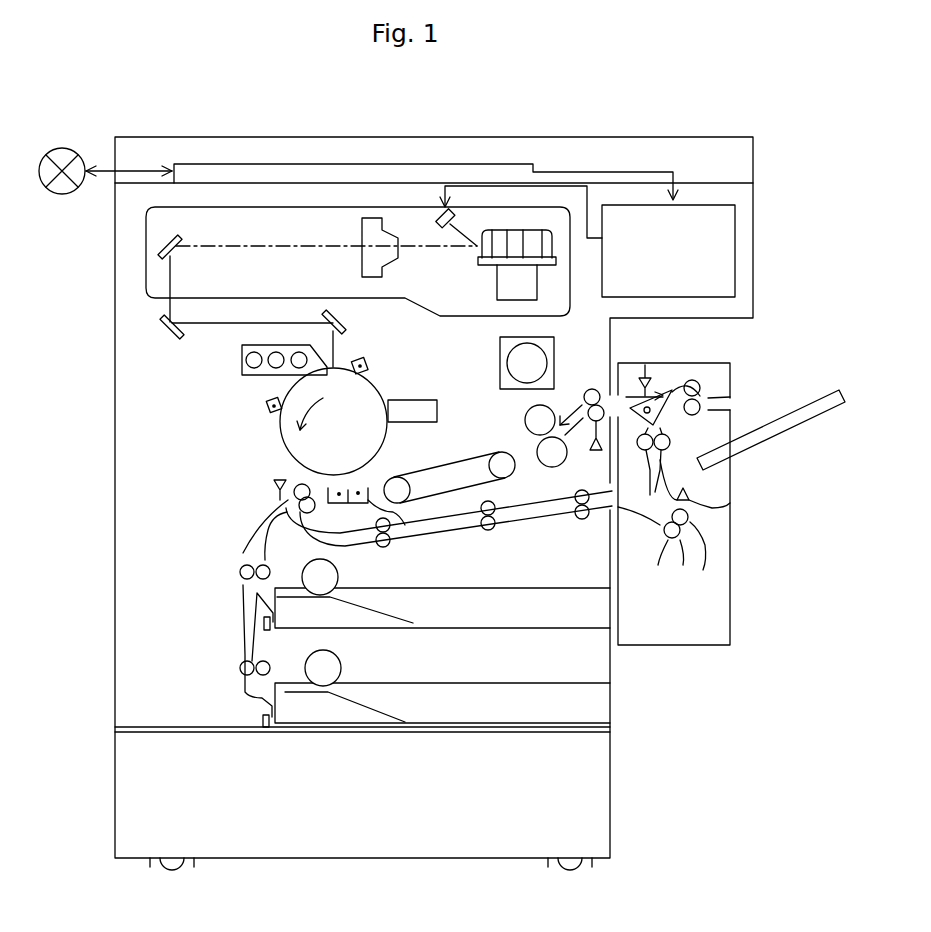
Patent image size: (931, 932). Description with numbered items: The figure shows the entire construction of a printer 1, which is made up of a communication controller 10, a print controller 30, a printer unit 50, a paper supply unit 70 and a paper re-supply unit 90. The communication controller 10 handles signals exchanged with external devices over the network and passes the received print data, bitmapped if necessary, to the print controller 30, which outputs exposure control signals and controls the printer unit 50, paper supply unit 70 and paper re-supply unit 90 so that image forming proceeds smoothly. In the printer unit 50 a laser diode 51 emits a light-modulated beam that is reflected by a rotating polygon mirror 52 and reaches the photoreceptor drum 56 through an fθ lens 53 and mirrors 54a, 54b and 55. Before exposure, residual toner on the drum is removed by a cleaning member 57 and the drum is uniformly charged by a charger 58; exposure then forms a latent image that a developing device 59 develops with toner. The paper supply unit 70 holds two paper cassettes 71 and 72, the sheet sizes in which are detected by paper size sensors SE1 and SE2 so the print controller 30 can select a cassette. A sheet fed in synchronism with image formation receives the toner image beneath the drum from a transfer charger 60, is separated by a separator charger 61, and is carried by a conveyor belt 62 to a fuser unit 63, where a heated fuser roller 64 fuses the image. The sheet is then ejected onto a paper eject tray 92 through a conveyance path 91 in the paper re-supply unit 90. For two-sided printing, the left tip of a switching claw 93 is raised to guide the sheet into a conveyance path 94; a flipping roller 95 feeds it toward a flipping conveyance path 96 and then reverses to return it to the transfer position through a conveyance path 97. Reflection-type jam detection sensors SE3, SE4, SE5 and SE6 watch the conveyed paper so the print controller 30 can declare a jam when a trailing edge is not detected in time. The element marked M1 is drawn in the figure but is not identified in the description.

The printer 1 is at (163, 103).
The communication controller 10 is at (460, 170).
The print controller 30 is at (725, 247).
The printer unit 50 is at (208, 383).
The laser diode 51 is at (436, 214).
The polygon mirror 52 is at (515, 262).
The fθ lens 53 is at (362, 266).
The mirror 54a is at (178, 240).
The mirror 54b is at (162, 320).
The mirror 55 is at (343, 323).
The photoreceptor drum 56 is at (282, 440).
The cleaning member 57 is at (437, 408).
The charger 58 is at (366, 360).
The developing device 59 is at (242, 355).
The transfer charger 60 is at (332, 505).
The separator charger 61 is at (405, 525).
The conveyor belt 62 is at (414, 477).
The fuser unit 63 is at (524, 420).
The fuser roller 64 is at (540, 463).
The paper supply unit 70 is at (208, 590).
The paper cassette 71 is at (487, 598).
The paper cassette 72 is at (470, 694).
The paper re-supply unit 90 is at (755, 522).
The conveyance path 91 is at (722, 374).
The paper eject tray 92 is at (790, 410).
The switching claw 93 is at (665, 395).
The conveyance path 94 is at (657, 477).
The flipping roller 95 is at (668, 540).
The flipping conveyance path 96 is at (683, 565).
The conveyance path 97 is at (543, 518).
The paper size sensor SE1 is at (262, 628).
The paper size sensor SE2 is at (260, 720).
The jam detection sensor SE3 is at (274, 486).
The jam detection sensor SE4 is at (594, 450).
The jam detection sensor SE5 is at (643, 368).
The jam detection sensor SE6 is at (733, 498).
The motor M1 is at (527, 363).